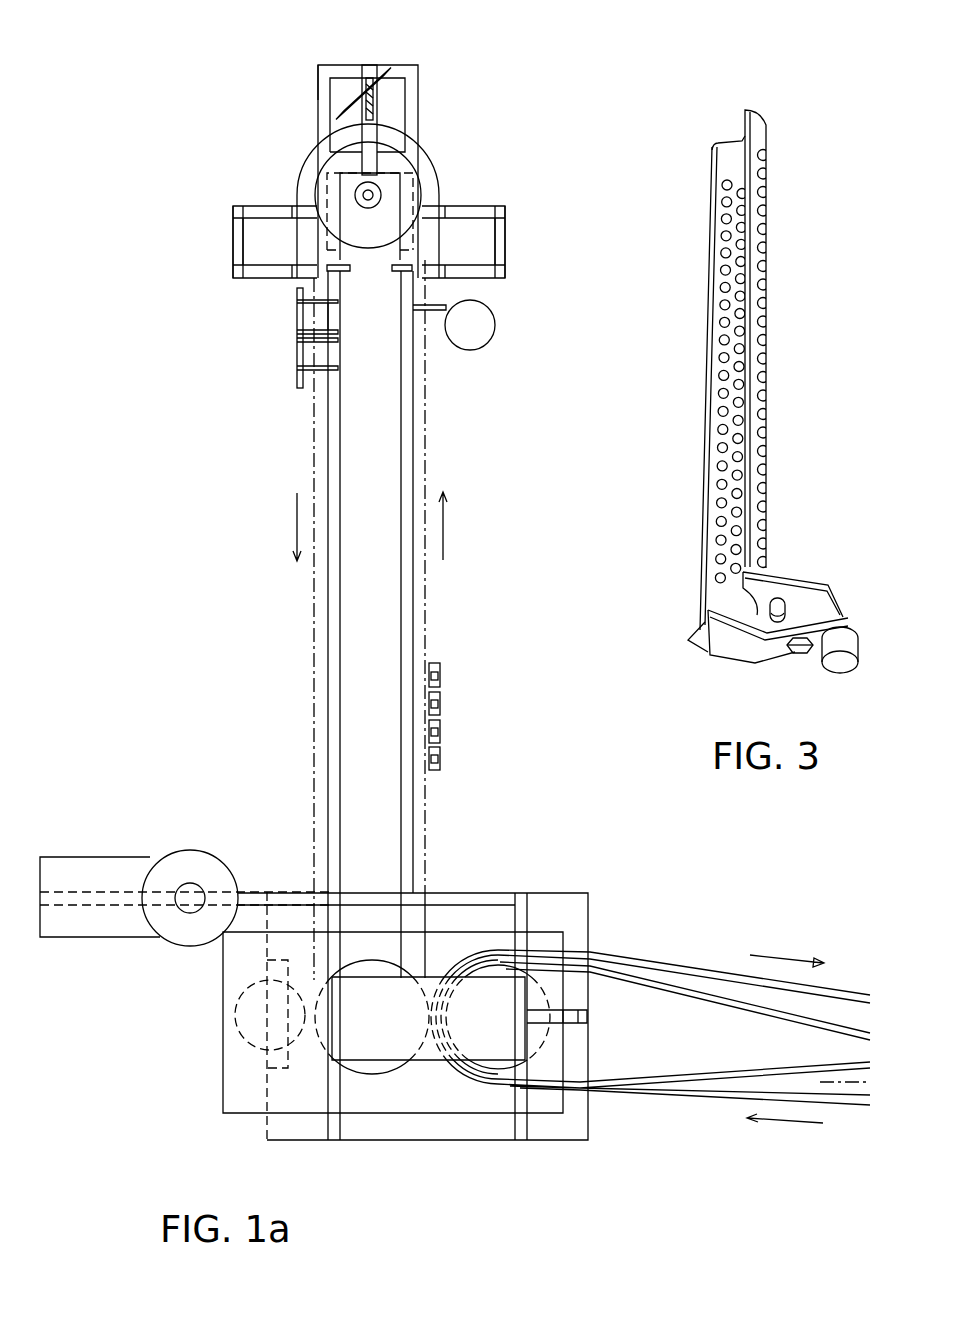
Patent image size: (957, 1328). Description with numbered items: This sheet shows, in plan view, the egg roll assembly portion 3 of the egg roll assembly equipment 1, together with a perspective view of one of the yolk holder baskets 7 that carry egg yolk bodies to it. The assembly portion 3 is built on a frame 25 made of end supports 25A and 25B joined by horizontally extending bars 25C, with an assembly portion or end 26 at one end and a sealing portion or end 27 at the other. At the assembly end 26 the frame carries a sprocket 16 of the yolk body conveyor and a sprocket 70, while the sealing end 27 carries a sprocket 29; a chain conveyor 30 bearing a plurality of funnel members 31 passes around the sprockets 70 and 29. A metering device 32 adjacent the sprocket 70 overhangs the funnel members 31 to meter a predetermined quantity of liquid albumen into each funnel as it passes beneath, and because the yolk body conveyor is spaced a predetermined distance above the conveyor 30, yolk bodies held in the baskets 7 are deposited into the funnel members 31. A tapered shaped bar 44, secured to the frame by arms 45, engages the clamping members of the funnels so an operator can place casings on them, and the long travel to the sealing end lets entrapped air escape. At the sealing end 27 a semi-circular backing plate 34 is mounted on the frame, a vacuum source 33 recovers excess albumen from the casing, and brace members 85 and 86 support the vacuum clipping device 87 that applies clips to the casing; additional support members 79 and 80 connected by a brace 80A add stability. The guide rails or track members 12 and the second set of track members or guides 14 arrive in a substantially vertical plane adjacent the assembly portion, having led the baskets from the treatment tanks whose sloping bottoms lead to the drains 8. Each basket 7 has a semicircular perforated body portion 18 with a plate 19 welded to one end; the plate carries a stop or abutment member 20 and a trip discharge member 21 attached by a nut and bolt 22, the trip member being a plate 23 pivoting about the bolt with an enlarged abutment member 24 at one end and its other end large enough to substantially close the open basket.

In FIG. 1A, the egg roll assembly equipment 1 is at (657, 900).
In FIG. 1A, the egg roll assembly portion 3 is at (245, 576).
In FIG. 3, the yolk holder baskets 7 is at (779, 351).
In FIG. 1A, the drains 8 is at (355, 106).
In FIG. 1A, the guide rails or track members 12 is at (709, 1095).
In FIG. 1A, the second set of track members or guides 14 is at (723, 975).
In FIG. 1A, the sprocket 16 is at (482, 1077).
In FIG. 3, the semicircular perforated body portion 18 is at (765, 240).
In FIG. 3, the plate 19 is at (798, 577).
In FIG. 3, the stop or abutment member 20 is at (785, 607).
In FIG. 3, the trip discharge member 21 is at (877, 649).
In FIG. 3, the nut and bolt 22 is at (800, 657).
In FIG. 3, the plate 23 is at (723, 647).
In FIG. 3, the enlarged abutment member 24 is at (842, 667).
In FIG. 1A, the frame 25 is at (443, 451).
In FIG. 1A, the support 25A is at (522, 892).
In FIG. 1A, the support 25B is at (318, 80).
In FIG. 1A, the horizontally extending bars 25C is at (328, 627).
In FIG. 1A, the assembly portion or end 26 is at (419, 1156).
In FIG. 1A, the sealing portion or end 27 is at (473, 94).
In FIG. 1A, the sprocket 29 is at (422, 175).
In FIG. 1A, the chain conveyor 30 is at (427, 823).
In FIG. 1A, the funnel members 31 is at (440, 763).
In FIG. 1A, the metering device 32 is at (188, 850).
In FIG. 1A, the vacuum source 33 is at (454, 325).
In FIG. 1A, the backing plate 34 is at (427, 148).
In FIG. 1A, the tapered shaped bar 44 is at (297, 378).
In FIG. 1A, the arms 45 is at (320, 373).
In FIG. 1A, the sprocket 70 is at (380, 1073).
In FIG. 1A, the support member 79 is at (273, 270).
In FIG. 1A, the support member 80 is at (263, 208).
In FIG. 1A, the brace 80A is at (235, 247).
In FIG. 1A, the brace member 85 is at (330, 73).
In FIG. 1A, the brace member 86 is at (368, 65).
In FIG. 1A, the vacuum clipping device 87 is at (390, 70).